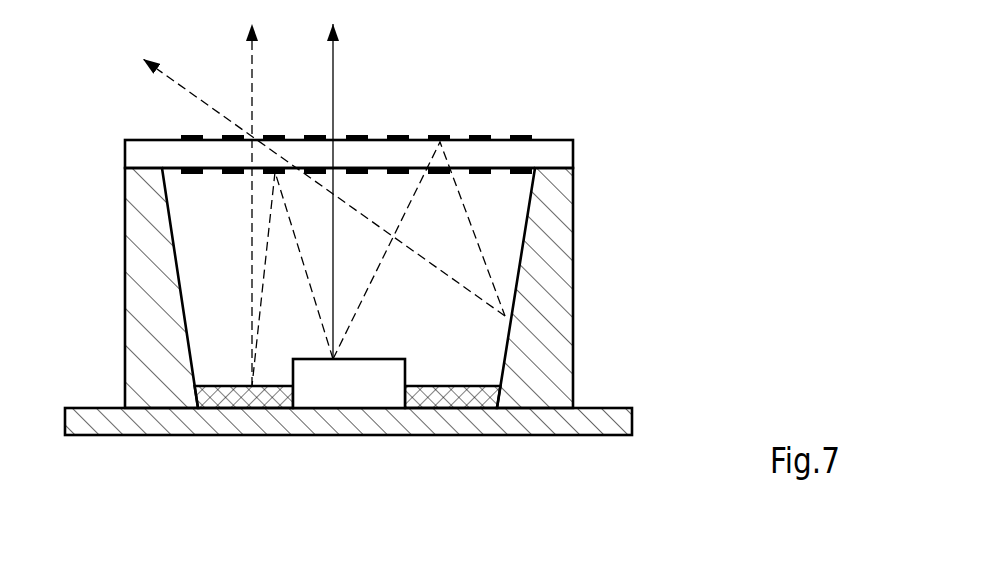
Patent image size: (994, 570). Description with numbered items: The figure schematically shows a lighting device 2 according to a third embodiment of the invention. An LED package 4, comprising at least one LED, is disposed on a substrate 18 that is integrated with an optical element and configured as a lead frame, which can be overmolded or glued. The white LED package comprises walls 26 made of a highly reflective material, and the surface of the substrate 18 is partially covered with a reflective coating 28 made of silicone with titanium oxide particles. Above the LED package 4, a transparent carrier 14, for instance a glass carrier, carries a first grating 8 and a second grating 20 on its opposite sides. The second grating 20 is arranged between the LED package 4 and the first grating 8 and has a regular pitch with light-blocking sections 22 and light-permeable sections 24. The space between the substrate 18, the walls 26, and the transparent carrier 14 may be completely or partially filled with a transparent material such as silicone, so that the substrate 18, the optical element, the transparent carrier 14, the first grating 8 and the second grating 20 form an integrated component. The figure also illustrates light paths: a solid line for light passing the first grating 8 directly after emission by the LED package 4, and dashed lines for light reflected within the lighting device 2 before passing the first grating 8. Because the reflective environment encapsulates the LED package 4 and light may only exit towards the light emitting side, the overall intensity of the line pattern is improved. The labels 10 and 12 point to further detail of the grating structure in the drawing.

The lighting device 2 is at (640, 67).
The LED package 4 is at (360, 395).
The first grating 8 is at (404, 124).
The conductor track / electrode 10 is at (481, 135).
The contact structure 12 is at (500, 135).
The transparent carrier 14 is at (560, 155).
The substrate 18 is at (605, 422).
The second grating 20 is at (487, 184).
The light-blocking sections 22 is at (232, 175).
The light-permeable sections 24 is at (213, 173).
The walls 26 is at (148, 333).
The reflective coating 28 is at (448, 397).